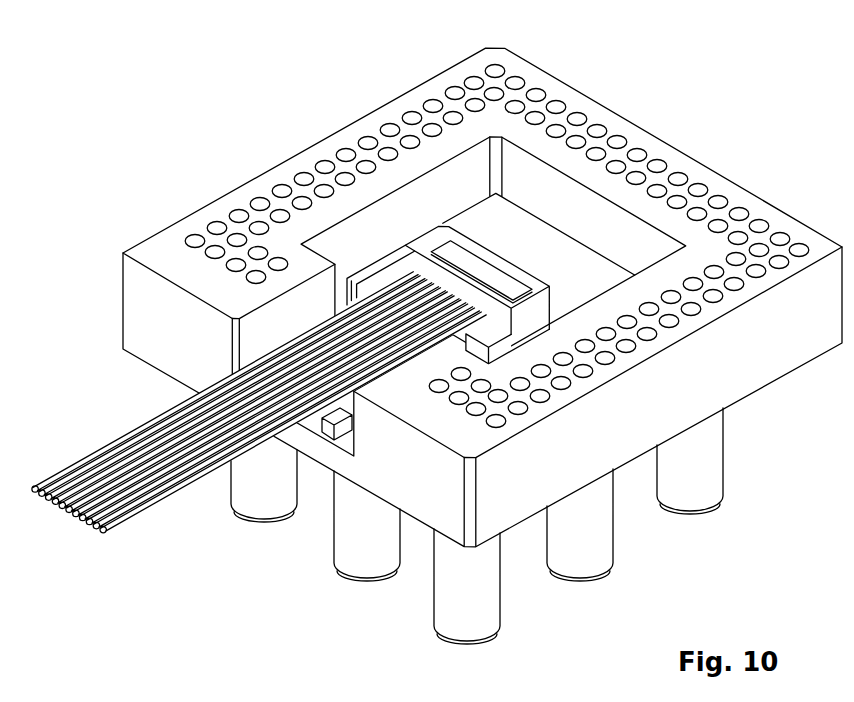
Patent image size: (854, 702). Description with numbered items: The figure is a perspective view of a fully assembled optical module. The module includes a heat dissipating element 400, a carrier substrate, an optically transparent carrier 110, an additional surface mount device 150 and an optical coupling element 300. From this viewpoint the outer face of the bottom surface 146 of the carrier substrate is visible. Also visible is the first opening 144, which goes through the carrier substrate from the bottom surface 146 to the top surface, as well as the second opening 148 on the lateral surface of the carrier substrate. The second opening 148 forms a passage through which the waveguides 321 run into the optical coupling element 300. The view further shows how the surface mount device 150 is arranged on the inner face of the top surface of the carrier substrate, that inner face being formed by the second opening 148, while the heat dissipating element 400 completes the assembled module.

The optically transparent carrier 110 is at (559, 268).
The first opening 144 is at (528, 182).
The bottom surface 146 is at (144, 254).
The second opening 148 is at (246, 348).
The additional surface mount device 150 is at (330, 416).
The optical coupling element 300 is at (448, 281).
The waveguides 321 is at (88, 465).
The heat dissipating element 400 is at (705, 457).